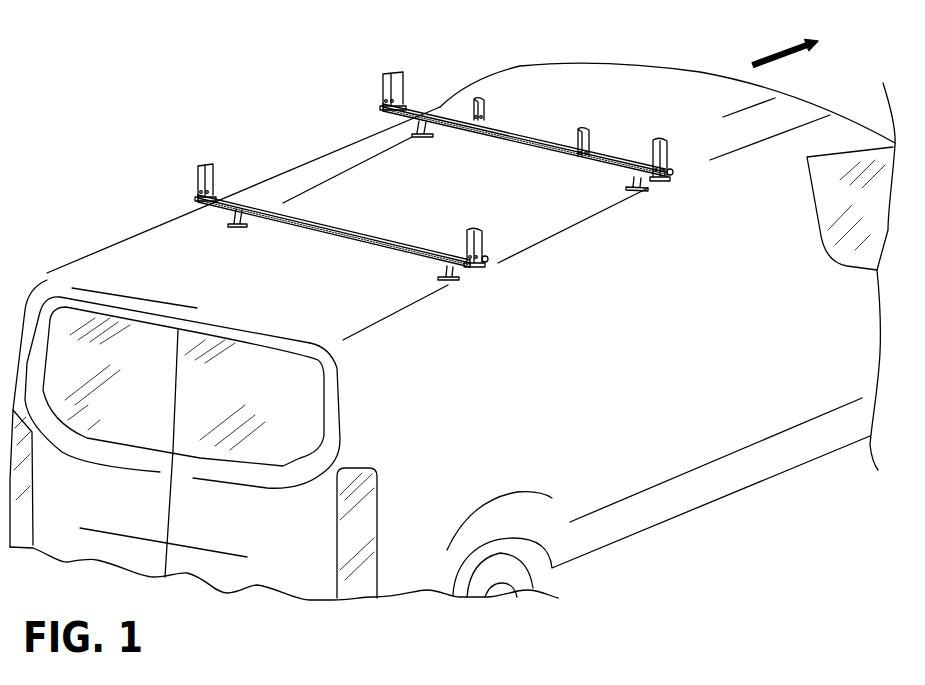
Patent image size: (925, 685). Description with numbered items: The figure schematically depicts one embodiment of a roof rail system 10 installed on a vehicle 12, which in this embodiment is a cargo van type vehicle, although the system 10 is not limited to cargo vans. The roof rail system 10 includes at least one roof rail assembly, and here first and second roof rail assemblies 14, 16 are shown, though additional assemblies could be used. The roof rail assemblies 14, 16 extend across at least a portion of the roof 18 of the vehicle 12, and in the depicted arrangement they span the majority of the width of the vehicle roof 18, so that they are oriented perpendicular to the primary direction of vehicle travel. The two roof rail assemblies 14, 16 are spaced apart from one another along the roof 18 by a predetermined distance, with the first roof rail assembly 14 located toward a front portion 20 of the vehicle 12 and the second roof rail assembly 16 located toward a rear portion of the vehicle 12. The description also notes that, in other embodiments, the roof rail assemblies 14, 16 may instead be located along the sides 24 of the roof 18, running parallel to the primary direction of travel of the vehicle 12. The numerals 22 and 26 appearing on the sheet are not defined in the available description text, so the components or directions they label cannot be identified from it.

The roof rail system 10 is at (452, 308).
The vehicle 12 is at (641, 74).
The first roof rail assembly 14 is at (528, 134).
The second roof rail assembly 16 is at (399, 242).
The roof 18 is at (223, 283).
The front portion 20 is at (526, 98).
The roof rack 22 is at (310, 209).
The sides 24 is at (162, 280).
The direction of travel 26 is at (801, 43).